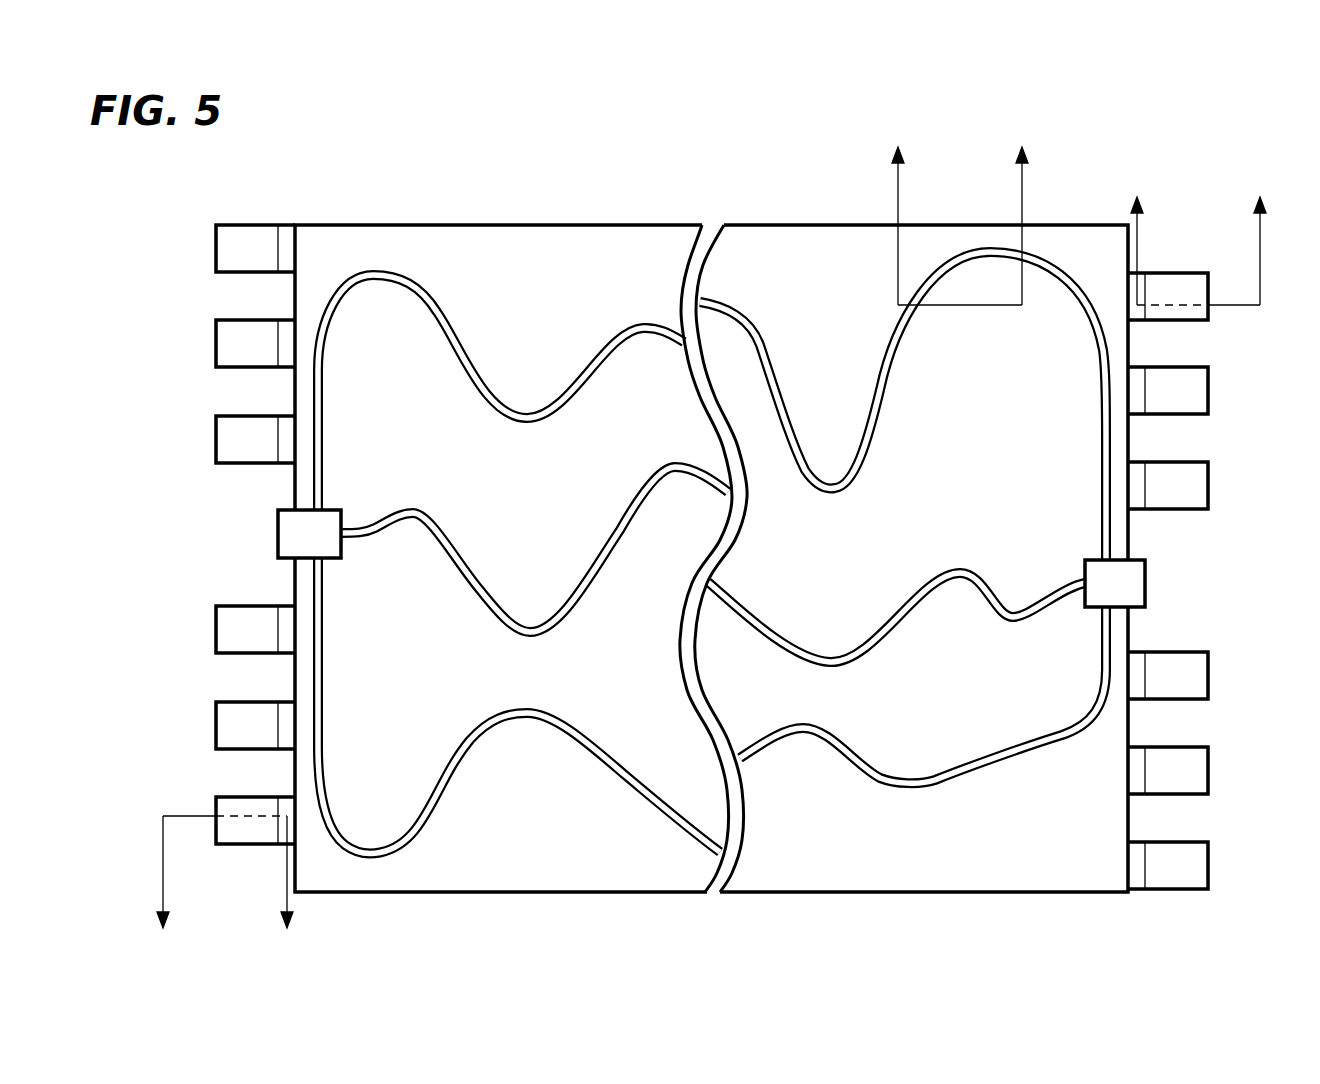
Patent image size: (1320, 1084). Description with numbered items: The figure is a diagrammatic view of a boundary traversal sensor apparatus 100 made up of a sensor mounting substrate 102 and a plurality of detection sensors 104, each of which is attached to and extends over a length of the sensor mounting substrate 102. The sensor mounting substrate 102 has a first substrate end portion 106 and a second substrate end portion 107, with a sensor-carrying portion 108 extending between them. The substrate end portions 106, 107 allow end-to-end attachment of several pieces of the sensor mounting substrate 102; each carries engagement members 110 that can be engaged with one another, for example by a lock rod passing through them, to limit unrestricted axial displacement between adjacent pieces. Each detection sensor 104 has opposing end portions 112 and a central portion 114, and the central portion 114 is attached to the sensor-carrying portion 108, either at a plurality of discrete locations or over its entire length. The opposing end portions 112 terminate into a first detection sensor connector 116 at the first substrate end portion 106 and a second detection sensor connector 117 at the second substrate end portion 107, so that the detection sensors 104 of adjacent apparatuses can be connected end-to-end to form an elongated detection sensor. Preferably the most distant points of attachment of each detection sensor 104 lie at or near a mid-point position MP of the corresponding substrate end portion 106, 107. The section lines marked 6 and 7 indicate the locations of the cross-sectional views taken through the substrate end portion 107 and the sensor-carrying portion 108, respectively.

The boundary traversal sensor apparatus 100 is at (540, 150).
The sensor mounting substrate 102 is at (1018, 493).
The detection sensor 104 is at (712, 552).
The first substrate end portion 106 is at (412, 527).
The second substrate end portion 107 is at (1198, 258).
The sensor-carrying portion 108 is at (447, 245).
The engagement member 110 is at (225, 262).
The opposing end portion 112 is at (324, 430).
The central portion 114 is at (630, 320).
The first detection sensor connector 116 is at (280, 536).
The second detection sensor connector 117 is at (1145, 585).
The mid-point position MP is at (365, 495).
The section line 6 is at (711, 565).
The section line 7 is at (960, 212).